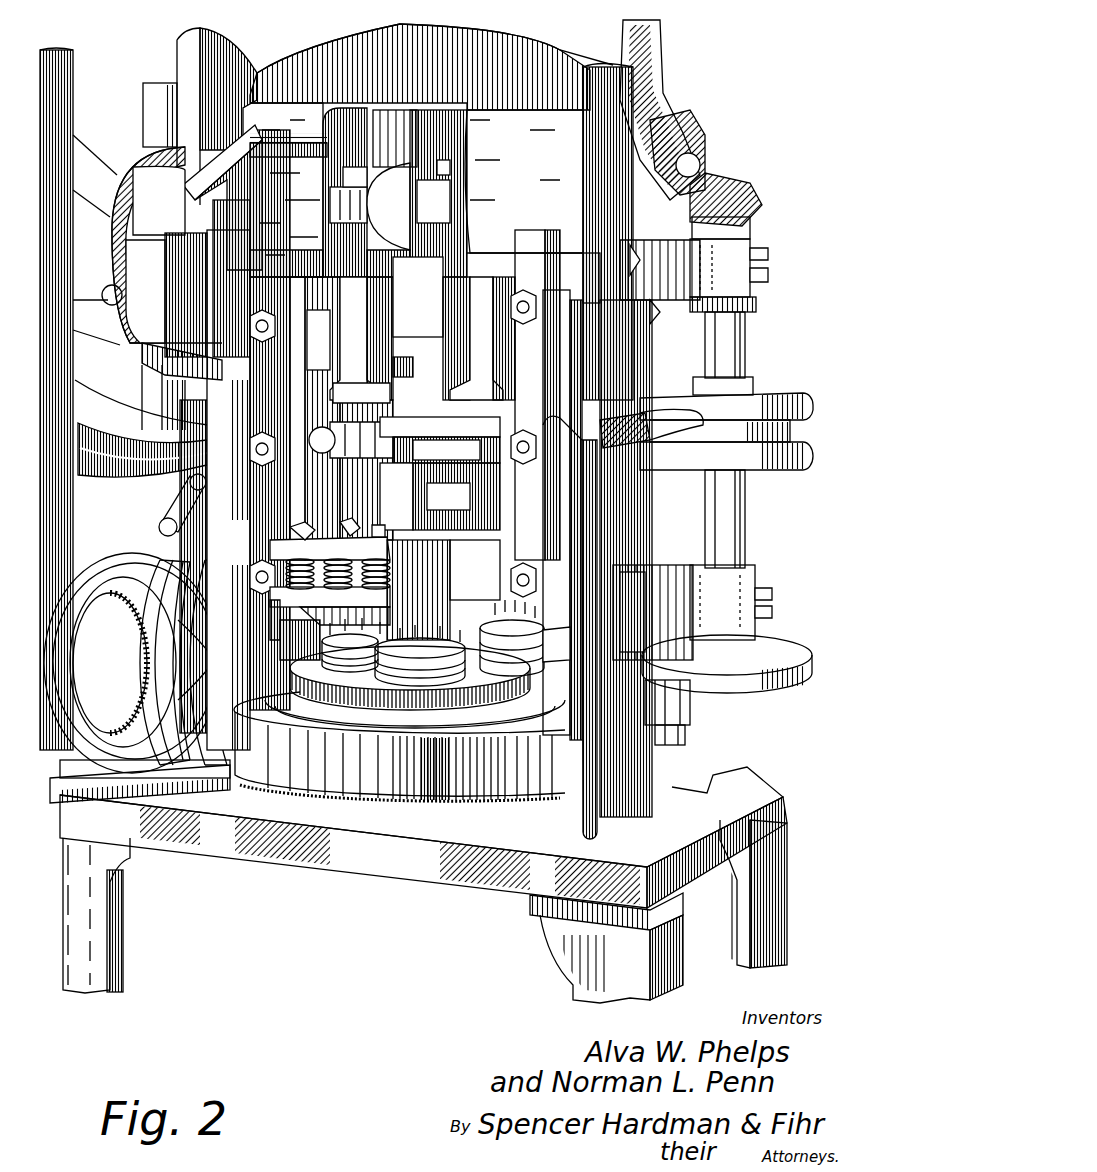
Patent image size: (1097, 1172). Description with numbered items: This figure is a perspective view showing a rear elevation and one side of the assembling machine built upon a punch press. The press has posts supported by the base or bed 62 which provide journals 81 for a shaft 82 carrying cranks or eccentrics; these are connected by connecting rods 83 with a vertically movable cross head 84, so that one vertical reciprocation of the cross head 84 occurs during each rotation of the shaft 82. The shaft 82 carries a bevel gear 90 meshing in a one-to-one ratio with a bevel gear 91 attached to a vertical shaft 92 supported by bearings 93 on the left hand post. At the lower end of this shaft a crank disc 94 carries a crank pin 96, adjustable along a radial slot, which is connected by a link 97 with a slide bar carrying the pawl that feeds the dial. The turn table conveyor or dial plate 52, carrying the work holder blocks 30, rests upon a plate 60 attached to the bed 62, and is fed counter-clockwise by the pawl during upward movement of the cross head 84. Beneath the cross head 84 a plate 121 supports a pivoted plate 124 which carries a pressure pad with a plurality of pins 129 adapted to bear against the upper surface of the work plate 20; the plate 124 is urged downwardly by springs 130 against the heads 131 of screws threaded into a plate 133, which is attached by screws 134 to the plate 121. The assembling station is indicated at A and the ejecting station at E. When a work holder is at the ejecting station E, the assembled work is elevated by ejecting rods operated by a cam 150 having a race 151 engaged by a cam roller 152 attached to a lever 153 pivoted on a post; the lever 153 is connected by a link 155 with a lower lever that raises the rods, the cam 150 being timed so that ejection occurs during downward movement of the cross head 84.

The plate 20 is at (530, 625).
The work holder block 30 is at (398, 675).
The dial plate 52 is at (333, 684).
The plate 60 is at (343, 700).
The bed 62 is at (430, 822).
The journals 81 is at (277, 180).
The shaft 82 is at (700, 165).
The connecting rods 83 is at (393, 287).
The cross head 84 is at (482, 512).
The bevel gear 90 is at (683, 140).
The bevel gear 91 is at (760, 197).
The vertical shaft 92 is at (746, 340).
The bearings 93 is at (752, 298).
The crank disc 94 is at (790, 650).
The crank pin 96 is at (672, 703).
The link 97 is at (680, 722).
The plate 121 is at (440, 590).
The plate 124 is at (275, 608).
The pins 129 is at (460, 620).
The springs 130 is at (345, 611).
The heads 131 is at (275, 640).
The plate 133 is at (270, 565).
The screws 134 is at (270, 545).
The cam 150 is at (803, 400).
The race 151 is at (820, 420).
The cam roller 152 is at (660, 436).
The lever 153 is at (640, 385).
The link 155 is at (590, 547).
The assembling station A is at (383, 690).
The ejecting station E is at (500, 672).